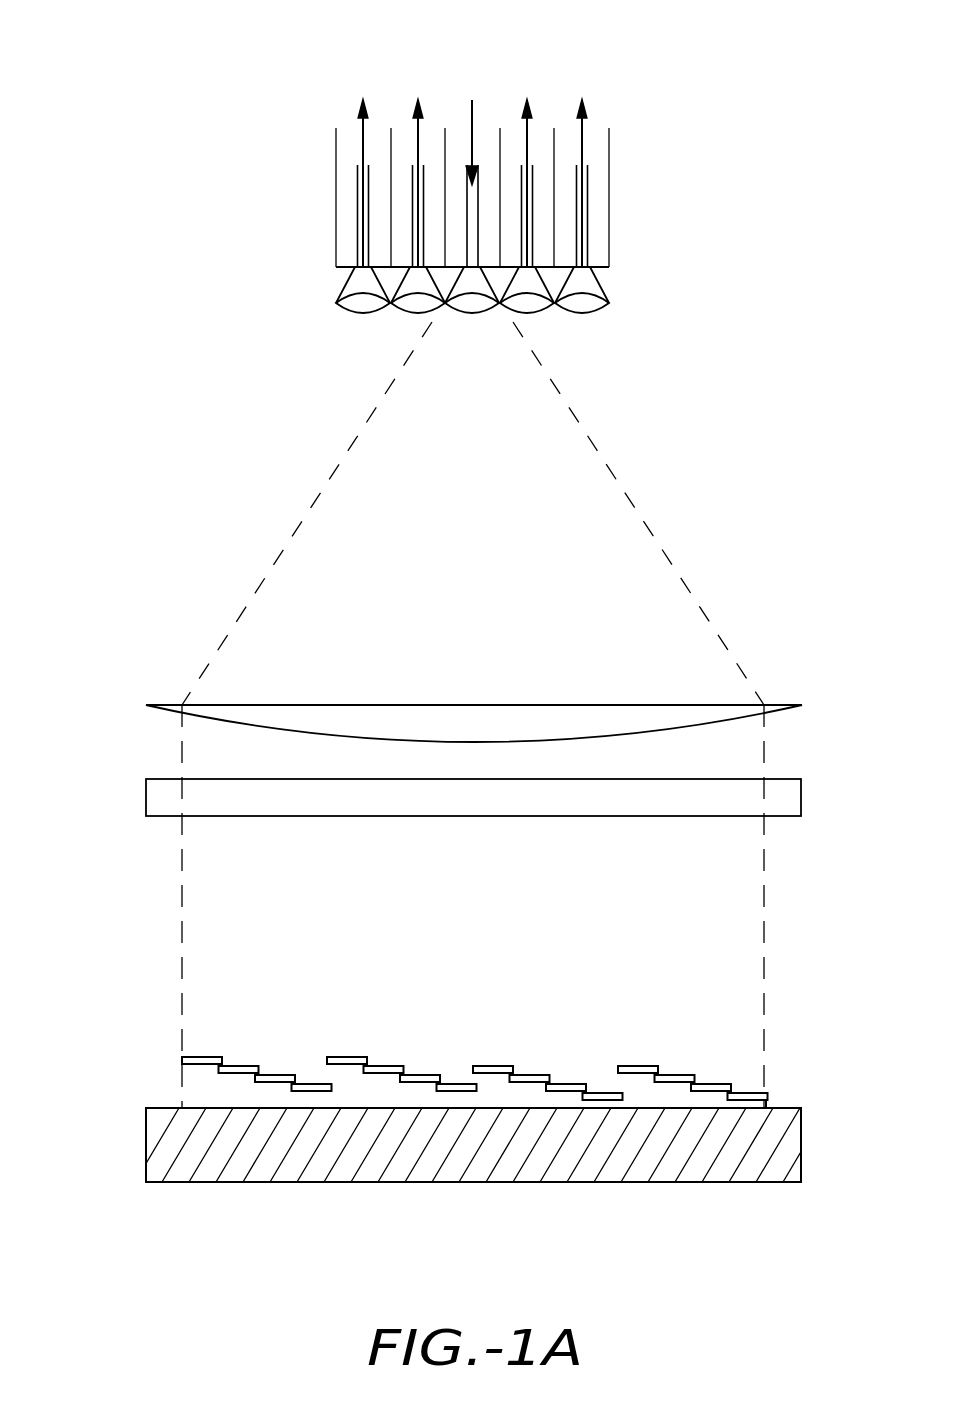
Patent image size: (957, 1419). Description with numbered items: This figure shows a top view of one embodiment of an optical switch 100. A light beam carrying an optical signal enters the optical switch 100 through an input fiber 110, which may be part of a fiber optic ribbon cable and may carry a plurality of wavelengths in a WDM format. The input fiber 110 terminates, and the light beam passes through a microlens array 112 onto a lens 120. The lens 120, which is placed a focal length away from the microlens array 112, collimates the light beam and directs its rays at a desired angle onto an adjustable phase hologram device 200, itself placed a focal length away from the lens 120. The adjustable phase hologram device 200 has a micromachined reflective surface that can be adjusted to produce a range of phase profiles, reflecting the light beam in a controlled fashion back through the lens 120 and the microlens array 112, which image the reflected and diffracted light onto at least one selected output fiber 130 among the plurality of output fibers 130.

The optical switch 100 is at (160, 63).
The input fiber 110 is at (472, 100).
The microlens array 112 is at (353, 303).
The lens 120 is at (177, 788).
The output fibers 130 is at (344, 138).
The adjustable phase hologram device 200 is at (235, 1153).